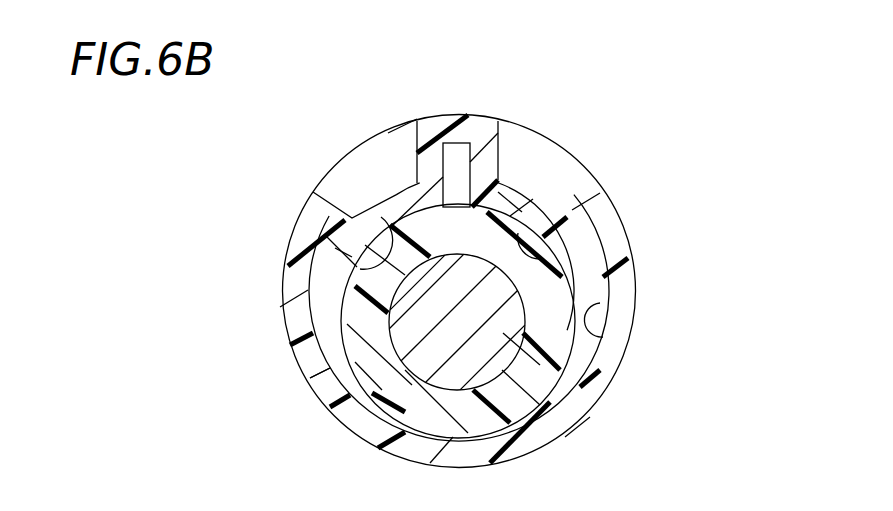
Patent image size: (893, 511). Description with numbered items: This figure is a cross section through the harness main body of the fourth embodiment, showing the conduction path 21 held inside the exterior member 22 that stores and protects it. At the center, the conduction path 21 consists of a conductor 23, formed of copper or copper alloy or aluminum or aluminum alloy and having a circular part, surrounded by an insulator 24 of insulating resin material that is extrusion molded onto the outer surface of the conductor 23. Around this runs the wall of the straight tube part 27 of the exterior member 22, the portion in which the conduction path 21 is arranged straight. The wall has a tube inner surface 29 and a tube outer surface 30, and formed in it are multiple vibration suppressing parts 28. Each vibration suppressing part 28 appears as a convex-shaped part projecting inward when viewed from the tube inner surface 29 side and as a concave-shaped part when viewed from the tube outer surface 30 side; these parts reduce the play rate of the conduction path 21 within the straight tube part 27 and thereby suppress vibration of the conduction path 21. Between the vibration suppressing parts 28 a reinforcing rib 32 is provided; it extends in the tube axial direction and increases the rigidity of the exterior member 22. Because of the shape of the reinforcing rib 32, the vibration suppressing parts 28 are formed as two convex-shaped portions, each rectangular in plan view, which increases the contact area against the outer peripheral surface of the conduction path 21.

The conduction path 21 is at (698, 377).
The exterior member 22 is at (304, 210).
The conductor 23 is at (520, 335).
The insulator 24 is at (545, 383).
The straight tube part 27 is at (310, 362).
The vibration suppressing part 28 is at (385, 251).
The tube inner surface 29 is at (596, 326).
The tube outer surface 30 is at (640, 293).
The reinforcing rib 32 is at (445, 121).